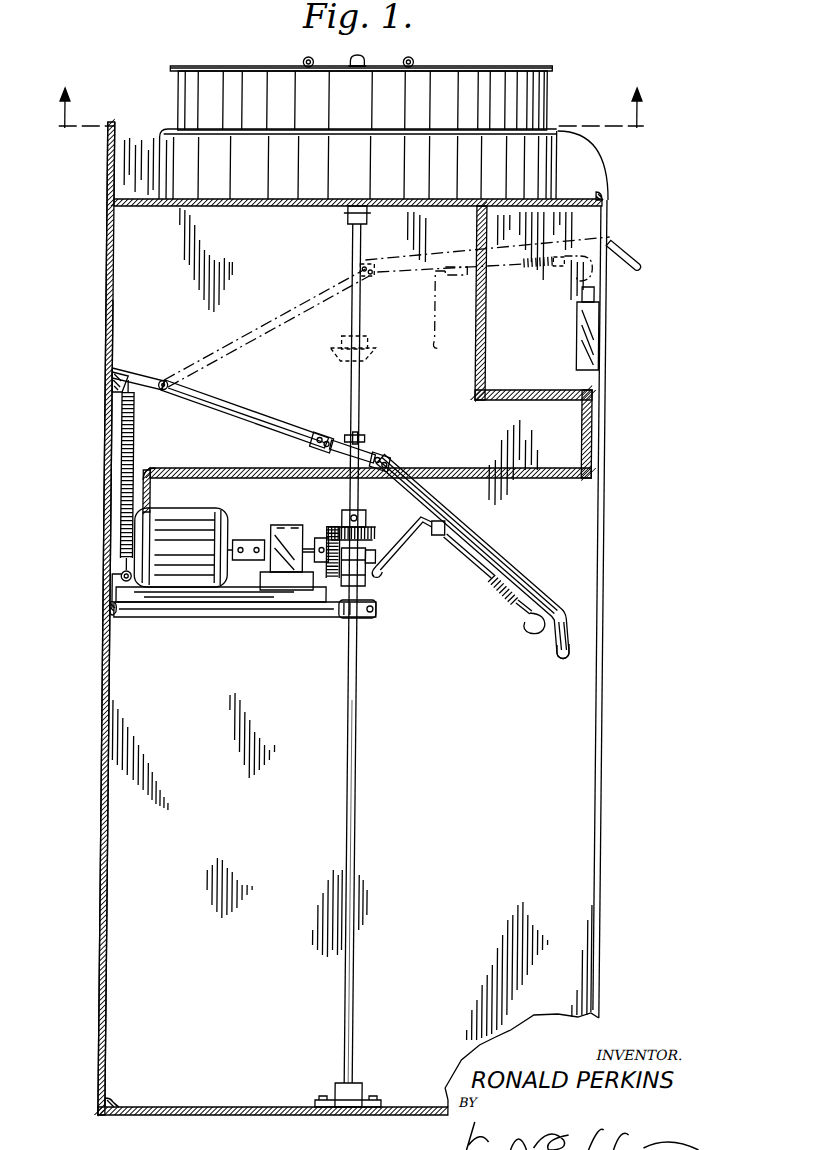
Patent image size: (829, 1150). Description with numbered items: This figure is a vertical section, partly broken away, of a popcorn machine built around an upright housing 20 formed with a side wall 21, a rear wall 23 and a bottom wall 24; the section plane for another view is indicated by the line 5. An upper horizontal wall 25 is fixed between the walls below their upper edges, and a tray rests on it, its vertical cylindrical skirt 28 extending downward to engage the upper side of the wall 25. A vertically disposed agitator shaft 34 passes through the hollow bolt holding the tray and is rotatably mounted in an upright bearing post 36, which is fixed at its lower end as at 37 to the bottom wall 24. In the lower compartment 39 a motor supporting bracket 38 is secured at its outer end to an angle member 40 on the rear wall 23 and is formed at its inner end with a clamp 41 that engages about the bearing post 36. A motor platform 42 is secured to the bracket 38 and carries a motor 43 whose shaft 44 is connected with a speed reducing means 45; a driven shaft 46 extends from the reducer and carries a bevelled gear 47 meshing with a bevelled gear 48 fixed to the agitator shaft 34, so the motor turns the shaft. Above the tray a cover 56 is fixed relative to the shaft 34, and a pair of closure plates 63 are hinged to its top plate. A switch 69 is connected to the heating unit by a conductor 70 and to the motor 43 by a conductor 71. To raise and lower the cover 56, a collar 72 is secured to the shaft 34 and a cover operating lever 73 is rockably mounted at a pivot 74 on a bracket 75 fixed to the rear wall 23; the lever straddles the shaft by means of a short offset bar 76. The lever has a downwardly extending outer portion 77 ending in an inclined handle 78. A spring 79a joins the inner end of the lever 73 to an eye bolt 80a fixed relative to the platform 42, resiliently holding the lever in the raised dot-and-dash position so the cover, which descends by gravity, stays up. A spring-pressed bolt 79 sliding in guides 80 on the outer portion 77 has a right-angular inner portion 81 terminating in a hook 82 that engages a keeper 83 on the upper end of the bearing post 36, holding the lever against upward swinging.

The section line 5- 5 is at (352, 97).
The upright housing 20 is at (323, 619).
The side wall 21 is at (139, 137).
The rear wall 23 is at (110, 992).
The bottom wall 24 is at (232, 1117).
The upper horizontal wall 25 is at (249, 206).
The vertical cylindrical skirt 28 is at (559, 173).
The agitator shaft 34 is at (364, 415).
The bearing post 36 is at (354, 676).
The bearing post fixing 37 is at (364, 1092).
The motor supporting bracket 38 is at (242, 617).
The lower compartment 39 is at (123, 675).
The angle member 40 is at (121, 612).
The clamp 41 is at (348, 618).
The motor platform 42 is at (196, 602).
The motor 43 is at (198, 522).
The motor shaft 44 is at (234, 542).
The speed reducing means 45 is at (289, 525).
The driven shaft 46 is at (314, 548).
The bevelled gear 47 is at (340, 562).
The bevelled gear 48 is at (368, 518).
The cover 56 is at (545, 101).
The closure plates 63 is at (468, 69).
The switch 69 is at (580, 327).
The conductor 70 is at (490, 332).
The conductor 71 is at (452, 470).
The collar 72 is at (370, 439).
The cover operating lever 73 is at (283, 312).
The pivot 74 is at (167, 380).
The bracket 75 is at (142, 370).
The bar 76 is at (344, 438).
The outer lever portion 77 is at (470, 537).
The handle 78 is at (566, 648).
The spring-pressed bolt 79 is at (463, 548).
The spring 79a is at (136, 447).
The guides 80 is at (444, 537).
The eye bolt 80a is at (126, 576).
The right-angular inner portion 81 is at (409, 545).
The hook 82 is at (376, 572).
The keeper 83 is at (378, 558).